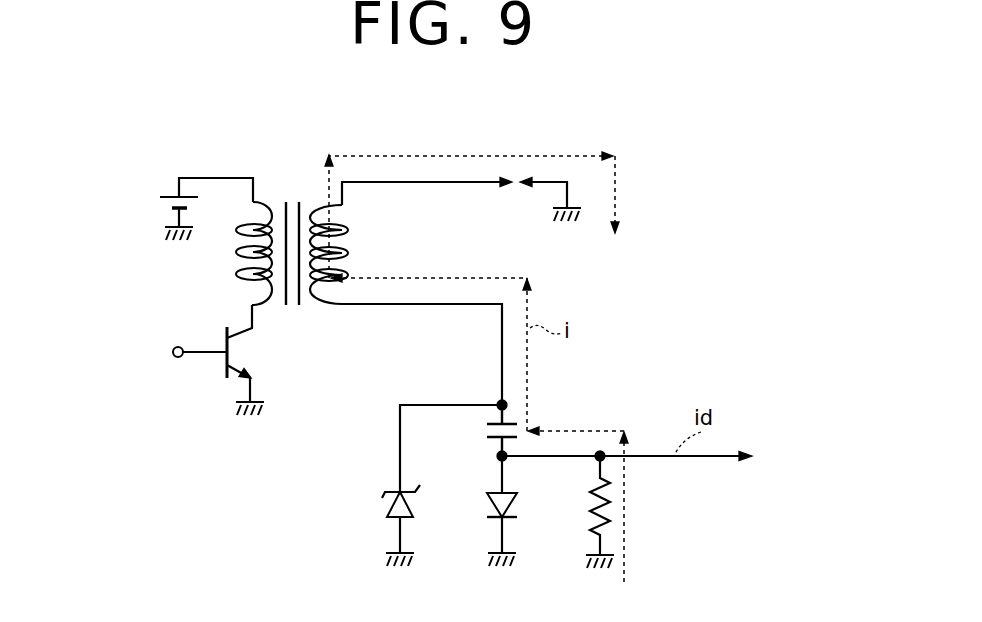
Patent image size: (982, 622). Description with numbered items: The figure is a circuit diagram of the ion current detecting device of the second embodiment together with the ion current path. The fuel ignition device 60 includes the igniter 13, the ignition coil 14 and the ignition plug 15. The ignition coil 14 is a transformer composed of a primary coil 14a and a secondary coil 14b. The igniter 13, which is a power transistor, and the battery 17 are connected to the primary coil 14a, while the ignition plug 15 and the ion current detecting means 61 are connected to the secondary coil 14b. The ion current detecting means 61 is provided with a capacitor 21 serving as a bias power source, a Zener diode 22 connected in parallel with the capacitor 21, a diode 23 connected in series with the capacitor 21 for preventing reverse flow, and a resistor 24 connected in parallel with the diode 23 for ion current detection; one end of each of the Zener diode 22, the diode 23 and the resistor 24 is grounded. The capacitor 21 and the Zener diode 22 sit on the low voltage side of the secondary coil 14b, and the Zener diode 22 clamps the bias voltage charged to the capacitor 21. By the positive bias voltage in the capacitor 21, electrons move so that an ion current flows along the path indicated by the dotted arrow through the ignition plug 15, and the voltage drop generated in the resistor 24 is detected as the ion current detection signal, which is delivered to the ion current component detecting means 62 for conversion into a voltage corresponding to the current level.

The igniter 13 is at (255, 353).
The ignition coil 14 is at (293, 200).
The primary coil 14a is at (233, 264).
The secondary coil 14b is at (343, 239).
The ignition plug 15 is at (515, 188).
The battery 17 is at (158, 199).
The capacitor 21 is at (485, 431).
The Zener diode 22 is at (388, 506).
The diode 23 is at (486, 507).
The resistor 24 is at (587, 508).
The fuel ignition device 60 is at (405, 145).
The ion current detecting means 61 is at (627, 396).
The ion current component detecting means 62 is at (663, 458).